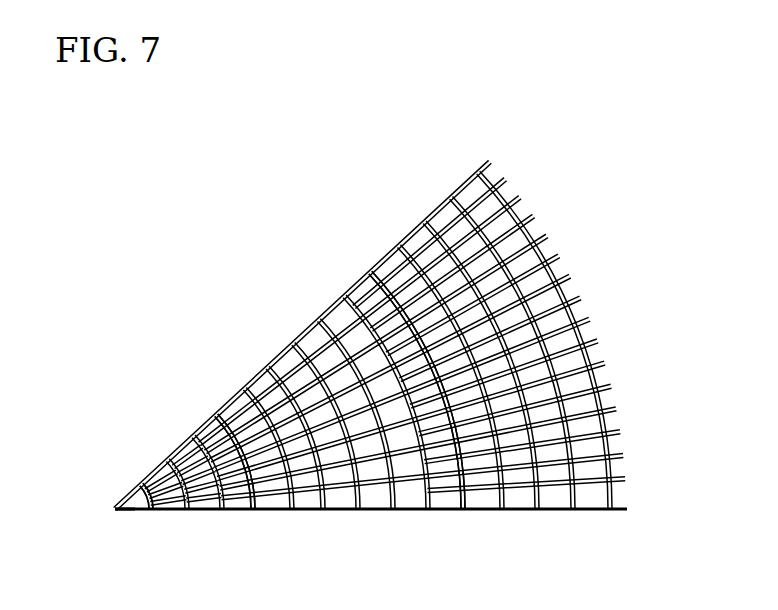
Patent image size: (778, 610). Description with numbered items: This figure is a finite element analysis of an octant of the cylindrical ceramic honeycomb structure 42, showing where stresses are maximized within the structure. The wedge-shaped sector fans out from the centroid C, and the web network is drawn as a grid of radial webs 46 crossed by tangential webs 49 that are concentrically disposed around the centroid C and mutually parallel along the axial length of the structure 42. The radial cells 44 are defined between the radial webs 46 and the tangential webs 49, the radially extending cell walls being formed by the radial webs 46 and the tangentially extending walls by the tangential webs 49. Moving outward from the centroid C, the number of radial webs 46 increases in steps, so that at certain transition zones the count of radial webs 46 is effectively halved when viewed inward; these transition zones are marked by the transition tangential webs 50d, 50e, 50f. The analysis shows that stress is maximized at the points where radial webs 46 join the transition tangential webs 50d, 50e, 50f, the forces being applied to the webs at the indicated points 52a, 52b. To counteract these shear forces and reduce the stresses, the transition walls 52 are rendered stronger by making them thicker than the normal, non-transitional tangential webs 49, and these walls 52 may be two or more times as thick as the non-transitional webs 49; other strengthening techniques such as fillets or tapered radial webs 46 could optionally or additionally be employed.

The structure 42 is at (377, 194).
The radial cells 44 is at (421, 373).
The radial webs 46 is at (608, 428).
The tangential webs 49 is at (298, 495).
The transition tangential web 50d is at (375, 269).
The transition tangential web 50e is at (222, 419).
The transition tangential web 50f is at (142, 484).
The walls 52 is at (153, 512).
The force application point 52a is at (436, 326).
The force application point 52b is at (456, 355).
The centroid C is at (116, 509).